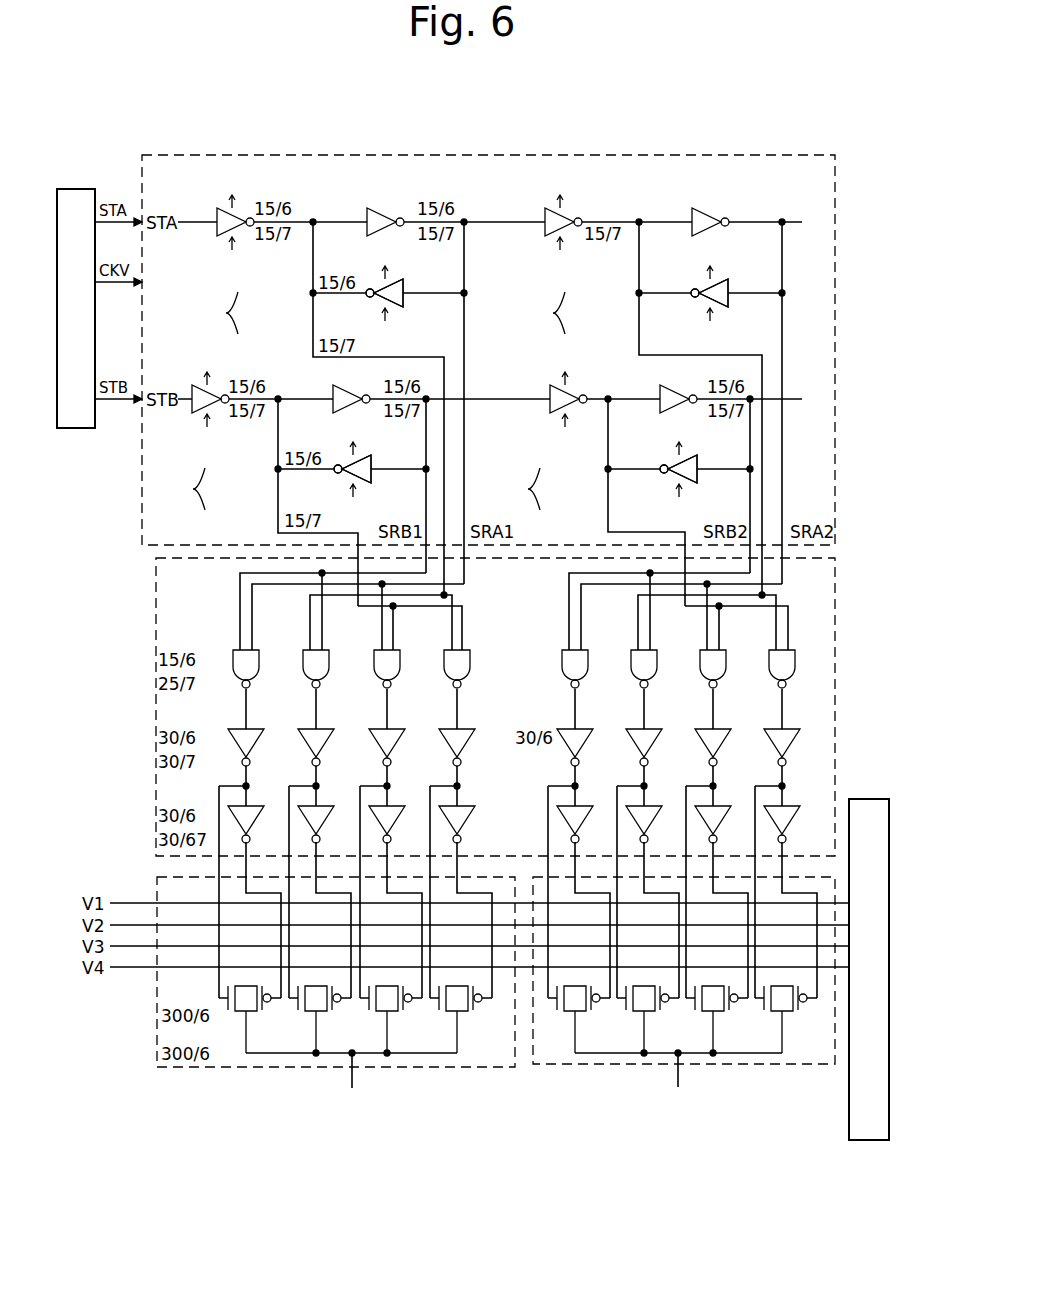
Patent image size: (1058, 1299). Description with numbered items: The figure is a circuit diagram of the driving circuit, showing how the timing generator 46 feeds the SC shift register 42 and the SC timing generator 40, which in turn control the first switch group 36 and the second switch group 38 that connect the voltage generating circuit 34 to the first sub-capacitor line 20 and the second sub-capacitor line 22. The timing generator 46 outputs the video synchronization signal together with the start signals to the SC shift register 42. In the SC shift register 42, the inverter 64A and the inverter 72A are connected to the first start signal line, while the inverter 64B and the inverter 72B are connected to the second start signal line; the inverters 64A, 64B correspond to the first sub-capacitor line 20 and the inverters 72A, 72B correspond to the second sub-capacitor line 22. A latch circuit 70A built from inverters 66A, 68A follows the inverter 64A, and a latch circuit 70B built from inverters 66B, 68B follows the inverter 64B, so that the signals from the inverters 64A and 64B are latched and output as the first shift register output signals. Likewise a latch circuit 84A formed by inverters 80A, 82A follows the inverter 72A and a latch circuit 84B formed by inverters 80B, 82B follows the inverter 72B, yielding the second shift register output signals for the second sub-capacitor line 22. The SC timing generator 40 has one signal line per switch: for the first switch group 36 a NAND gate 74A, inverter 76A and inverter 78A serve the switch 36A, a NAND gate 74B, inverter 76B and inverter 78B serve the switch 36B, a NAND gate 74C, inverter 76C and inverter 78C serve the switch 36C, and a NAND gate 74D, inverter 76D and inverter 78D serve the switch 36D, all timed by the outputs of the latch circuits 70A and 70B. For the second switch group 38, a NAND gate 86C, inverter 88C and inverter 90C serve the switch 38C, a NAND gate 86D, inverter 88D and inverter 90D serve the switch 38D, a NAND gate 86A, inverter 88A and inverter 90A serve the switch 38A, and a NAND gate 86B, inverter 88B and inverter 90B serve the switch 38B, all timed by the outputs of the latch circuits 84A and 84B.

The timing generator 46 is at (78, 189).
The SC shift register 42 is at (654, 155).
The SC timing generator 40 is at (156, 672).
The first switch group 36 is at (272, 1067).
The second switch group 38 is at (610, 1064).
The voltage generating circuit 34 is at (849, 1125).
The first sub-capacitor line 20 is at (352, 1082).
The second sub-capacitor line 22 is at (678, 1080).
The inverter 64A is at (217, 215).
The inverter 64B is at (192, 407).
The inverter 66A is at (367, 232).
The inverter 66B is at (333, 409).
The inverter 68A is at (385, 298).
The inverter 68B is at (353, 474).
The latch circuit 70A is at (299, 306).
The latch circuit 70B is at (267, 482).
The inverter 72A is at (545, 220).
The inverter 72B is at (550, 397).
The inverter 80A is at (692, 232).
The inverter 80B is at (660, 409).
The inverter 82A is at (710, 298).
The inverter 82B is at (679, 474).
The latch circuit 84A is at (624, 306).
The latch circuit 84B is at (596, 482).
The NAND gate 74A is at (238, 648).
The NAND gate 74B is at (308, 648).
The NAND gate 74C is at (379, 648).
The NAND gate 74D is at (449, 648).
The inverter 76A is at (236, 727).
The inverter 76B is at (306, 727).
The inverter 76C is at (377, 727).
The inverter 76D is at (447, 727).
The inverter 78A is at (256, 806).
The inverter 78B is at (326, 806).
The inverter 78C is at (397, 806).
The inverter 78D is at (467, 806).
The NAND gate 86A is at (705, 648).
The NAND gate 86B is at (774, 648).
The NAND gate 86C is at (567, 648).
The NAND gate 86D is at (636, 648).
The inverter 88A is at (703, 727).
The inverter 88B is at (772, 727).
The inverter 88C is at (565, 727).
The inverter 88D is at (634, 727).
The inverter 90A is at (723, 806).
The inverter 90B is at (792, 806).
The inverter 90C is at (585, 806).
The inverter 90D is at (654, 806).
The switch 36A is at (252, 1012).
The switch 36B is at (322, 1012).
The switch 36C is at (393, 1012).
The switch 36D is at (463, 1012).
The switch 38A is at (719, 1012).
The switch 38B is at (788, 1012).
The switch 38C is at (581, 1012).
The switch 38D is at (650, 1012).